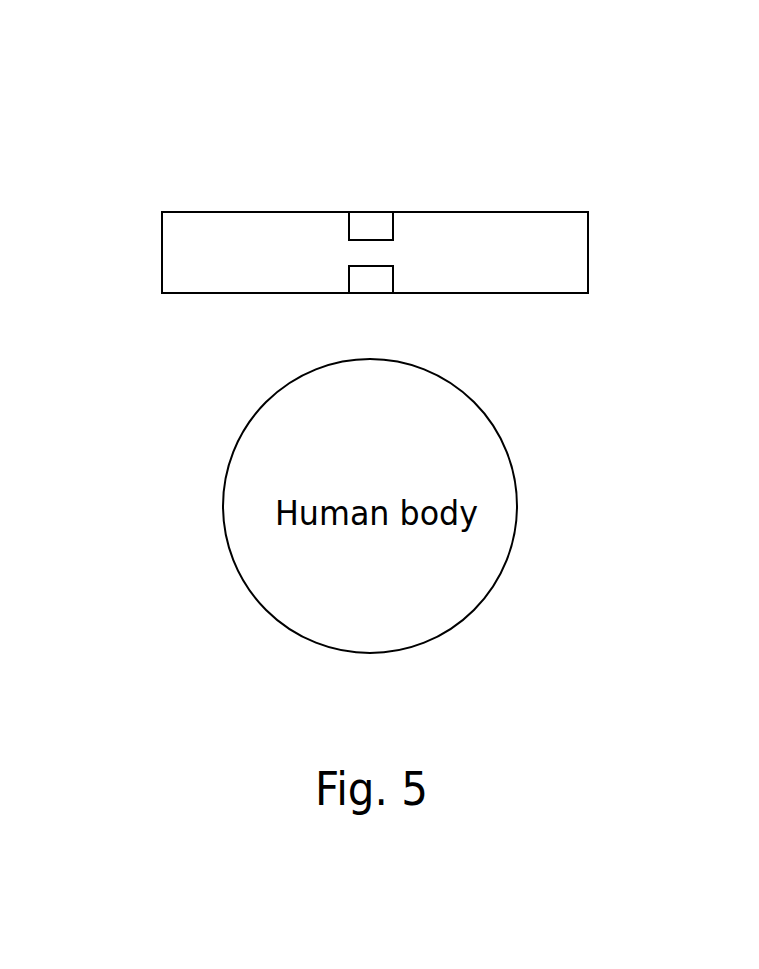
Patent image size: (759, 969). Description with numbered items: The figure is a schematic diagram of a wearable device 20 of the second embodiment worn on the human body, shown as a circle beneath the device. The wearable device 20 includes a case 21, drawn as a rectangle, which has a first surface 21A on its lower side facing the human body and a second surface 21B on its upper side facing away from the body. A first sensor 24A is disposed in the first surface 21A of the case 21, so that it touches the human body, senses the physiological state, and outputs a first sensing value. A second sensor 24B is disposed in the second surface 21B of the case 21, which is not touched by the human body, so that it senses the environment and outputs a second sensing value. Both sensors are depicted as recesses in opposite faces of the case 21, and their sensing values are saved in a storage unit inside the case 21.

The wearable device 20 is at (401, 224).
The case 21 is at (401, 256).
The first surface 21A is at (562, 294).
The second surface 21B is at (562, 213).
The first sensor 24A is at (372, 280).
The second sensor 24B is at (372, 227).